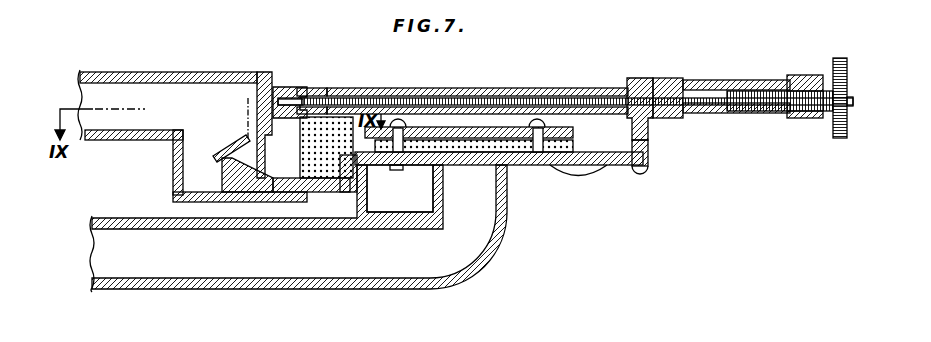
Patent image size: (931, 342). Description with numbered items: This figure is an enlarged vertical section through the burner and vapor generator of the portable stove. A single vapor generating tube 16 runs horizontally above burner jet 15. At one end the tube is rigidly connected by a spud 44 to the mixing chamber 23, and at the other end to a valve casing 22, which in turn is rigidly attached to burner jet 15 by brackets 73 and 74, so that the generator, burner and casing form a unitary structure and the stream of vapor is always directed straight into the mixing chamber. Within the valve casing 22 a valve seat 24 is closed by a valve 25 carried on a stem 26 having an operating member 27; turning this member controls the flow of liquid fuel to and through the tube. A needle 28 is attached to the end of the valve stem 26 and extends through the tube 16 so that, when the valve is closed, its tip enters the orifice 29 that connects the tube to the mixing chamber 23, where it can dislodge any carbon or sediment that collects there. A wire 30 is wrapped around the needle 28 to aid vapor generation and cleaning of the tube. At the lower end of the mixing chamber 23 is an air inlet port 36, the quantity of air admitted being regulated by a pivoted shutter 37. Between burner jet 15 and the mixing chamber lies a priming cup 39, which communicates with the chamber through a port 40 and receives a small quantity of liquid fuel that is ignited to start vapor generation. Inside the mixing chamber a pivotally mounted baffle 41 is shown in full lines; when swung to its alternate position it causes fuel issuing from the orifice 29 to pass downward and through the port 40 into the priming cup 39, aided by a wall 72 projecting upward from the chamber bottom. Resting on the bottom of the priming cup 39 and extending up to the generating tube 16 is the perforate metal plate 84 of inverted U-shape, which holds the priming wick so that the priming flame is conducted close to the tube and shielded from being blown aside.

The burner jet 15 is at (575, 138).
The vapor generating tube 16 is at (533, 87).
The valve casing 22 is at (725, 95).
The mixing chamber 23 is at (203, 92).
The valve seat 24 is at (722, 110).
The valve 25 is at (740, 93).
The valve stem 26 is at (850, 122).
The valve operating member 27 is at (835, 135).
The needle 28 is at (307, 93).
The orifice 29 is at (267, 70).
The wire 30 is at (487, 93).
The air inlet port 36 is at (200, 190).
The shutter 37 is at (187, 200).
The priming cup 39 is at (350, 192).
The port 40 is at (270, 180).
The baffle 41 is at (154, 121).
The spud 44 is at (288, 88).
The wall 72 is at (222, 165).
The bracket 73 is at (588, 173).
The bracket 74 is at (653, 135).
The perforate metal plate 84 is at (333, 178).